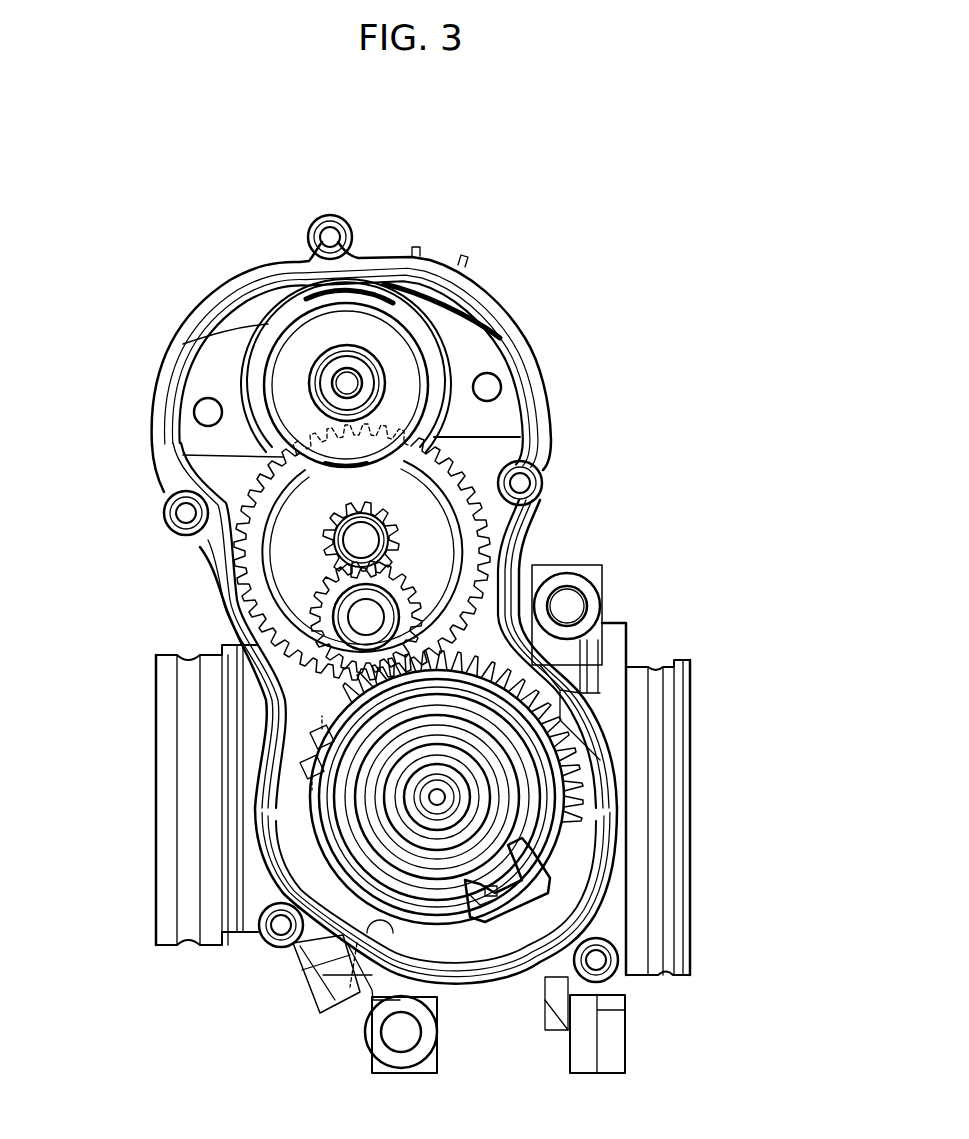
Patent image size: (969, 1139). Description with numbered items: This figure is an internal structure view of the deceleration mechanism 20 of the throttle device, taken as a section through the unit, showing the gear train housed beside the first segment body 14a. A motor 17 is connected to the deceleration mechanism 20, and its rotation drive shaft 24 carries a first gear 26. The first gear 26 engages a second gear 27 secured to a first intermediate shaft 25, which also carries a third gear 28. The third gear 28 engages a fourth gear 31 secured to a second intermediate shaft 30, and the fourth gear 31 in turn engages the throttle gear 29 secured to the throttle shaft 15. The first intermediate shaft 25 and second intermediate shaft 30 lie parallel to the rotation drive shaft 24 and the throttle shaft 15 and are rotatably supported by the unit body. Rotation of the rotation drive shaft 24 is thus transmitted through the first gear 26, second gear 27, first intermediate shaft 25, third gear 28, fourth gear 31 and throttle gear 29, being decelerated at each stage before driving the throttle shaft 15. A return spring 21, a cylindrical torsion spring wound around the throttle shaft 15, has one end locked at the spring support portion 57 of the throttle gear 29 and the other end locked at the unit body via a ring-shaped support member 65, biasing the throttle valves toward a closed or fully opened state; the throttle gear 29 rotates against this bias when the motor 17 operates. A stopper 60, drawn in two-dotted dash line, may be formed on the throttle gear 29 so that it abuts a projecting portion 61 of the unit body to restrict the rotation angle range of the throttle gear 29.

The first segment body 14a is at (640, 662).
The throttle shaft 15 is at (408, 850).
The motor 17 is at (441, 347).
The deceleration mechanism 20 is at (485, 220).
The return spring 21 is at (330, 818).
The rotation drive shaft 24 is at (340, 383).
The first intermediate shaft 25 is at (350, 538).
The first gear 26 is at (340, 378).
The second gear 27 is at (453, 457).
The third gear 28 is at (392, 544).
The throttle gear 29 is at (563, 772).
The second intermediate shaft 30 is at (320, 668).
The fourth gear 31 is at (358, 623).
The spring support portion 57 is at (495, 885).
The stopper 60 is at (312, 740).
The projecting portion 61 is at (338, 1012).
The ring-shaped support member 65 is at (553, 868).